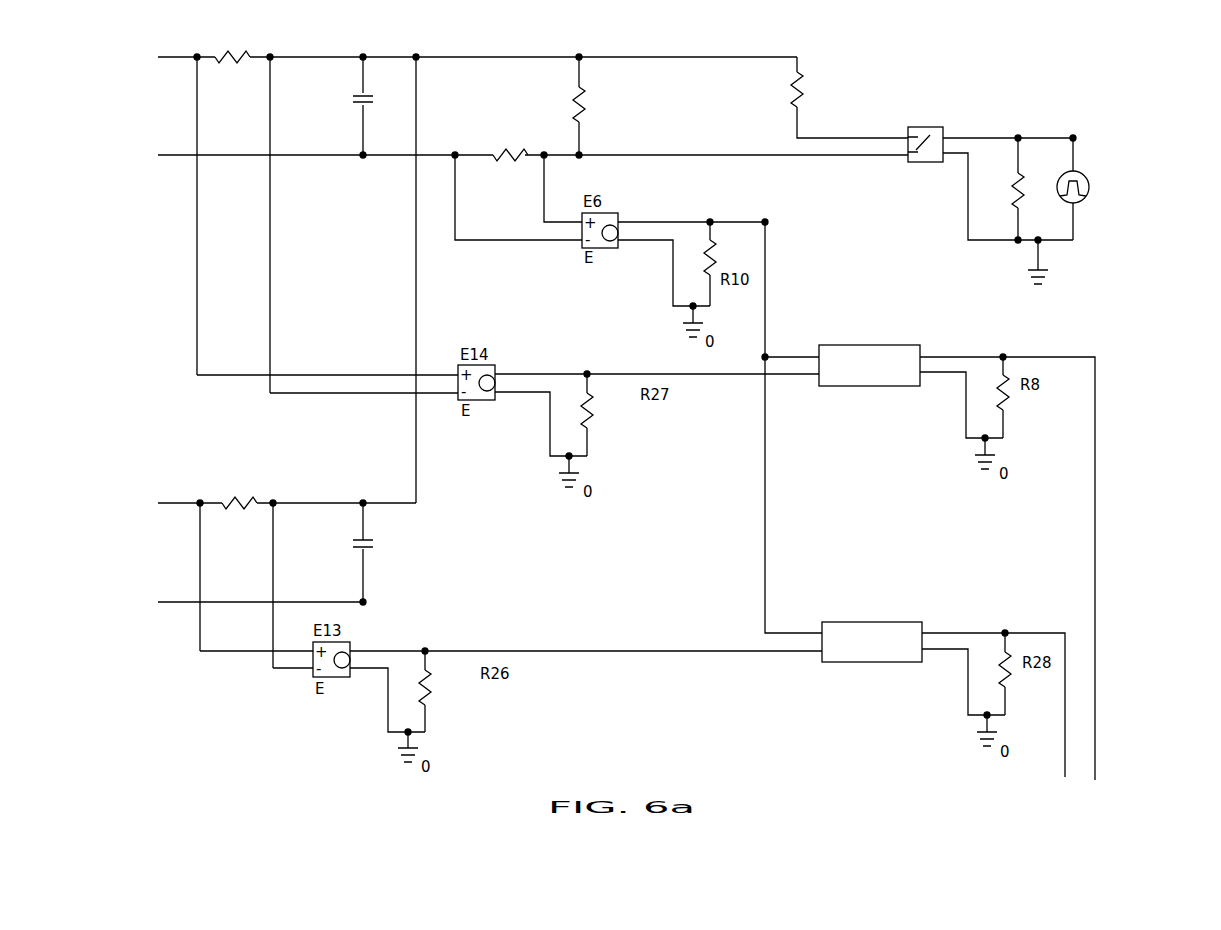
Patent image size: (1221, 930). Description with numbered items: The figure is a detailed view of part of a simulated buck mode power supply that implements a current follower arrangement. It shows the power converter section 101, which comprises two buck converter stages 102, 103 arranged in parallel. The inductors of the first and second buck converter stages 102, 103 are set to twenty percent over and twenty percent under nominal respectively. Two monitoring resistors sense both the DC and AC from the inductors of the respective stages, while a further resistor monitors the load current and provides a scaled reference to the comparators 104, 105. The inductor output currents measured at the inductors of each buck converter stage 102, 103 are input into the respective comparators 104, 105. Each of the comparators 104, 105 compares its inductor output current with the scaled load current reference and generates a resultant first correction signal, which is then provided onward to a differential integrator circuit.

The power converter section 101 is at (1108, 153).
The first buck converter stage 102 is at (157, 104).
The second buck converter stage 103 is at (165, 553).
The comparator 104 is at (872, 345).
The comparator 105 is at (875, 622).